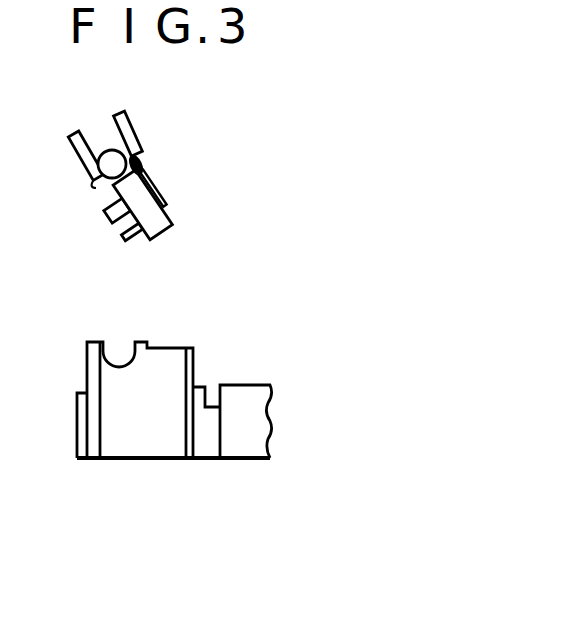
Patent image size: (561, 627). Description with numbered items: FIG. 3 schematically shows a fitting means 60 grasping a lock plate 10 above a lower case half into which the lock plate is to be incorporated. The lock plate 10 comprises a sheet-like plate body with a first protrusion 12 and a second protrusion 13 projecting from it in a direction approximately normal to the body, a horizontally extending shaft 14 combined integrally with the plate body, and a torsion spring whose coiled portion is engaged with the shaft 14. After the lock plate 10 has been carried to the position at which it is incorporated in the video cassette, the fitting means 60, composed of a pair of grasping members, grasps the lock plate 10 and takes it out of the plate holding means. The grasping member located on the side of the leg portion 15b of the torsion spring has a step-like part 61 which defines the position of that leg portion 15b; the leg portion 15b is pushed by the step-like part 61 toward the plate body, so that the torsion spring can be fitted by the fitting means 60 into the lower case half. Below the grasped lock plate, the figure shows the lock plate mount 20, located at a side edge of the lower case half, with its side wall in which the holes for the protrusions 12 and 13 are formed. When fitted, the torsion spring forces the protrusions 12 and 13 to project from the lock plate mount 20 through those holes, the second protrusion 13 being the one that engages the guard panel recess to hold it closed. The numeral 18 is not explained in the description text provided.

The lock plate 10 is at (181, 242).
The first protrusion 12 is at (110, 219).
The second protrusion 13 is at (126, 240).
The shaft 14 is at (96, 177).
The leg portion 15b is at (161, 198).
The base 18 is at (163, 476).
The lock plate mount 20 is at (165, 346).
The fitting means 60 is at (132, 128).
The step-like part 61 is at (139, 158).